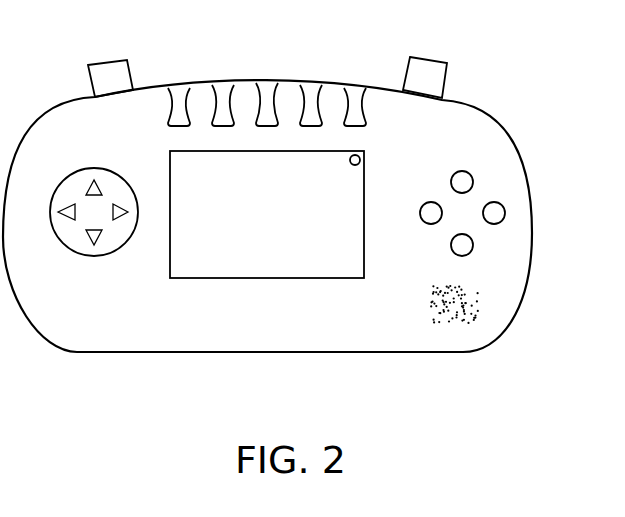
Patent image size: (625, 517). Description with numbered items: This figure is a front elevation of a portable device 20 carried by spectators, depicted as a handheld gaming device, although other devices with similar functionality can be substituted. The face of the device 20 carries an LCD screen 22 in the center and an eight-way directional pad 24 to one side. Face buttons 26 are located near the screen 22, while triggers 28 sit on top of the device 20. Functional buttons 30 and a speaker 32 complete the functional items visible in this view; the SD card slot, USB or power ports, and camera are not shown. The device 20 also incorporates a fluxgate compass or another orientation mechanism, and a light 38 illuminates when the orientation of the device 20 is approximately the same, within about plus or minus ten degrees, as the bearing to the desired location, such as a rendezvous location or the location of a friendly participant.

The portable device 20 is at (398, 369).
The LCD screen 22 is at (280, 223).
The directional pad 24 is at (88, 257).
The face buttons 26 is at (505, 212).
The triggers 28 is at (106, 62).
The functional buttons 30 is at (268, 83).
The speaker 32 is at (478, 305).
The light 38 is at (360, 158).